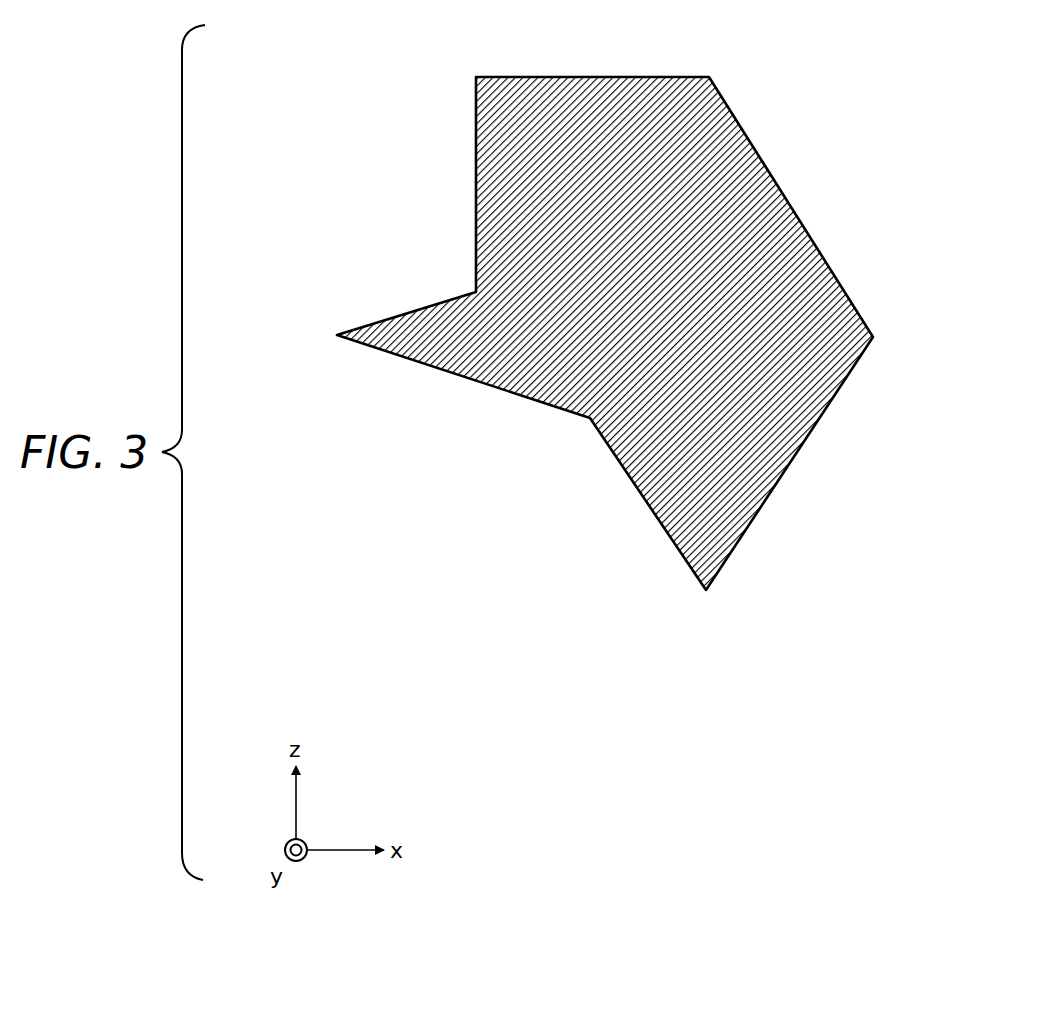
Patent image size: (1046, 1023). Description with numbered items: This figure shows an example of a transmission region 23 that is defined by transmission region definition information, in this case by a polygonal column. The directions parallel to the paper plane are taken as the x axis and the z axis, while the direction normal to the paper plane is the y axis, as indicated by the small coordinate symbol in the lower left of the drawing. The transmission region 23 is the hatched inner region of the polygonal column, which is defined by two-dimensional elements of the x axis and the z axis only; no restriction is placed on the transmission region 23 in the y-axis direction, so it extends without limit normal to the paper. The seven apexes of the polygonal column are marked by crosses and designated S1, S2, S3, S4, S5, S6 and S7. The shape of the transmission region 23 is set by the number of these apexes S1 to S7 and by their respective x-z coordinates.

The transmission region 23 is at (587, 90).
The apex S1 is at (465, 65).
The apex S2 is at (464, 304).
The apex S3 is at (578, 406).
The apex S4 is at (325, 323).
The apex S5 is at (694, 578).
The apex S6 is at (861, 325).
The apex S7 is at (697, 65).